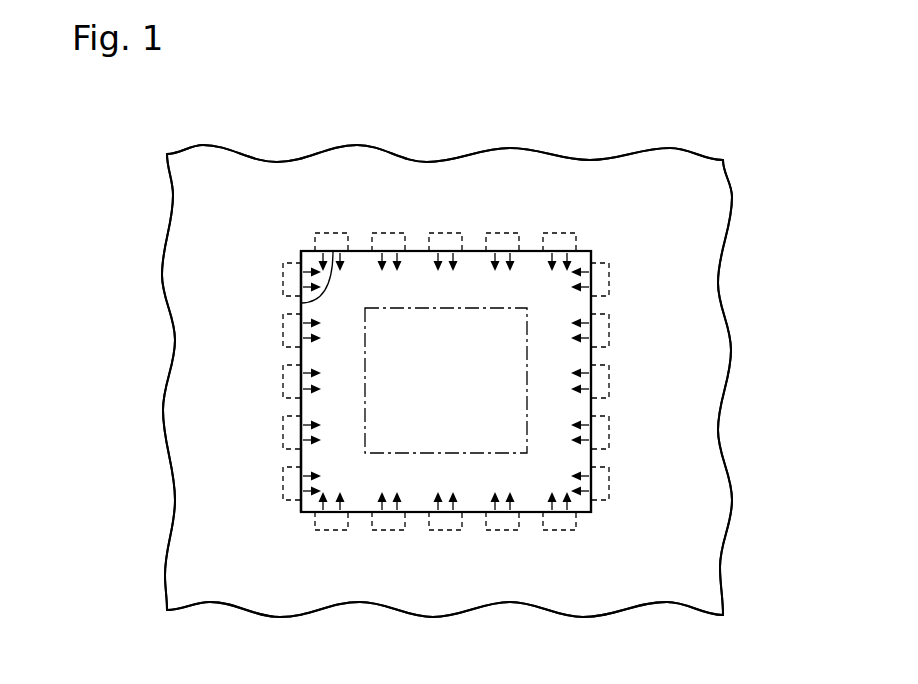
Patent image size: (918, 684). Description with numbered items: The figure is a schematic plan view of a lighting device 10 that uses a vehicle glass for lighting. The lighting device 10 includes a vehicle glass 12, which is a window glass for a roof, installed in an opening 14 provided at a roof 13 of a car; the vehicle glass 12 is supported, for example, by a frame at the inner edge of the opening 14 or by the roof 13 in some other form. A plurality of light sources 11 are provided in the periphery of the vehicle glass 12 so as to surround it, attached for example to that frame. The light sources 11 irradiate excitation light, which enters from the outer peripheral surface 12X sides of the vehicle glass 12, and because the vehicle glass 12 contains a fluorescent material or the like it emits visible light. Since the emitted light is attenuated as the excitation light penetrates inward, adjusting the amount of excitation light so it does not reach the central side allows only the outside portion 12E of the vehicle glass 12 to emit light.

The lighting device 10 is at (664, 572).
The light sources 11 is at (390, 233).
The vehicle glass 12 is at (503, 330).
The outside portion 12E is at (556, 290).
The outer peripheral surface 12X is at (300, 357).
The roof 13 is at (712, 231).
The opening 14 is at (333, 251).